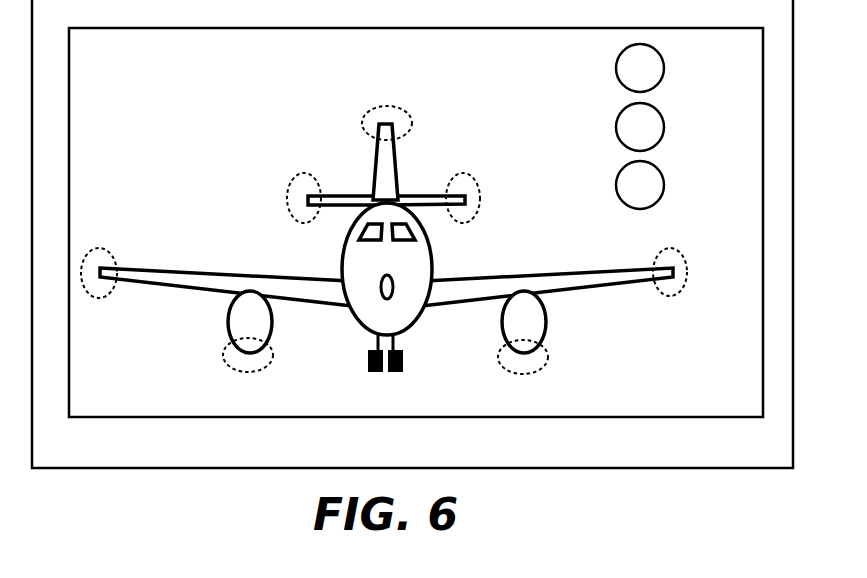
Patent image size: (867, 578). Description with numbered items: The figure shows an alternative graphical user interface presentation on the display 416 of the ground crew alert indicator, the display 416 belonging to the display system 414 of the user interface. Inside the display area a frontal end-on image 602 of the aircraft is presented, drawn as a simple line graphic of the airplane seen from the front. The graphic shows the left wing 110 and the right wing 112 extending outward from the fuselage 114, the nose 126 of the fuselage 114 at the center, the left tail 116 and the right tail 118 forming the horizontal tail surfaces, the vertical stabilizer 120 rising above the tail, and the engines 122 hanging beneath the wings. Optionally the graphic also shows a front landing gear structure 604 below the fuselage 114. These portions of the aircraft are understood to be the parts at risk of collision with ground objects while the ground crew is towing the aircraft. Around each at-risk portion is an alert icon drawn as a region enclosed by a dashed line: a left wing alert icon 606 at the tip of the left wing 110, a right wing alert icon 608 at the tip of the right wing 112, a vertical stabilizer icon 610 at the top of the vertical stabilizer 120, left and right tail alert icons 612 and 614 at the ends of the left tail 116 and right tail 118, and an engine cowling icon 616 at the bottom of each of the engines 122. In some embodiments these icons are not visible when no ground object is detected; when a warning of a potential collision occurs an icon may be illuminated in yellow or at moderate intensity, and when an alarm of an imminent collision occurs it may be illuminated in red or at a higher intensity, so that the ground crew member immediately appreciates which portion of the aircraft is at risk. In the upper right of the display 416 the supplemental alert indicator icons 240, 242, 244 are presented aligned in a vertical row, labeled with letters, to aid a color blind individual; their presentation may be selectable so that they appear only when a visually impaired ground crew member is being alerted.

The left wing 110 is at (603, 265).
The right wing 112 is at (150, 266).
The fuselage 114 is at (386, 247).
The left tail 116 is at (425, 190).
The right tail 118 is at (333, 195).
The vertical stabilizer 120 is at (378, 158).
The engines 122 is at (228, 325).
The nose 126 is at (382, 284).
The supplemental alert indicator icon 240 is at (676, 180).
The supplemental alert indicator icon 242 is at (676, 124).
The supplemental alert indicator icon 244 is at (676, 66).
The display system 414 is at (604, 451).
The display 416 is at (210, 418).
The frontal end-on image 602 is at (161, 86).
The front landing gear structure 604 is at (367, 356).
The left wing alert icon 606 is at (688, 272).
The right wing alert icon 608 is at (93, 300).
The vertical stabilizer icon 610 is at (390, 106).
The left tail alert icon 612 is at (488, 191).
The right tail alert icon 614 is at (288, 195).
The engine cowling icon 616 is at (228, 366).